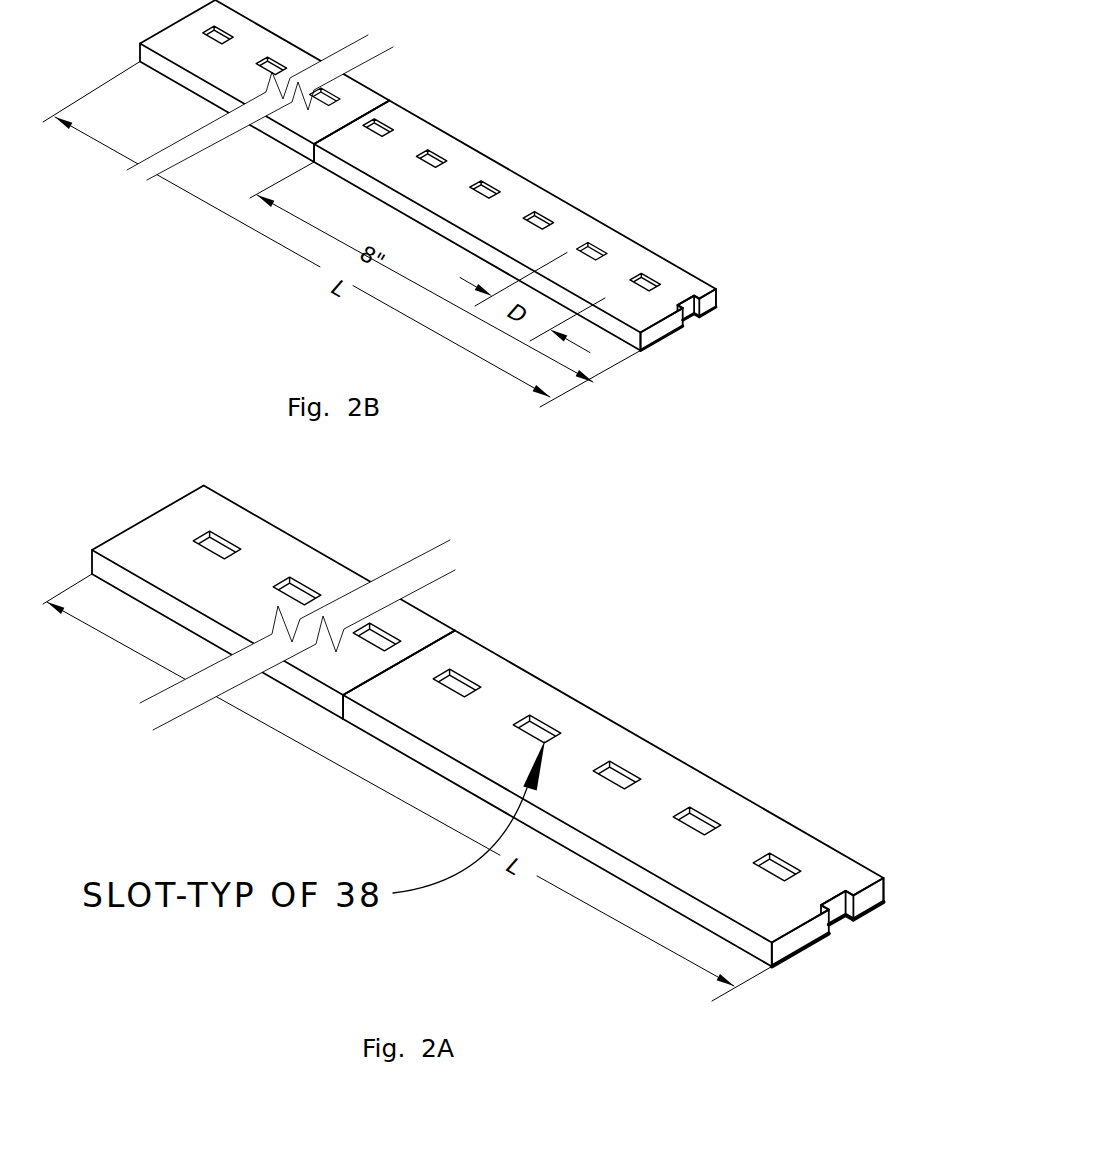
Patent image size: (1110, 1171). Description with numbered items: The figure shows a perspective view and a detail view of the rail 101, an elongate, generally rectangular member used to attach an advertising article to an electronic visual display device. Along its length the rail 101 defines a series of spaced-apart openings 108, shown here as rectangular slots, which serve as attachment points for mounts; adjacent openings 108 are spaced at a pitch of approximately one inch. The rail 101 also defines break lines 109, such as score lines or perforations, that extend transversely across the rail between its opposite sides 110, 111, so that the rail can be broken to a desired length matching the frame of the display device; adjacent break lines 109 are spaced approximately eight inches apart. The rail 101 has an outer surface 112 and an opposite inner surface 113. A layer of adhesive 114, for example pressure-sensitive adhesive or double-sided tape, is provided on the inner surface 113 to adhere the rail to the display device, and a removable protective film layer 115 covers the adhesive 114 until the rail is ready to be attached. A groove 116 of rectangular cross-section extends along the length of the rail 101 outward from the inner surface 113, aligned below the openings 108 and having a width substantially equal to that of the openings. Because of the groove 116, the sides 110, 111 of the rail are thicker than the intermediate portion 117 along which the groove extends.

In FIG. 2B, the rail 101 is at (490, 251).
In FIG. 2A, the rail 101 is at (488, 783).
In FIG. 2B, the openings 108 is at (543, 213).
In FIG. 2A, the openings 108 is at (617, 767).
In FIG. 2B, the break lines 109 is at (368, 115).
In FIG. 2A, the break lines 109 is at (437, 641).
In FIG. 2B, the side of the rail 110 is at (222, 97).
In FIG. 2A, the side of the rail 110 is at (318, 700).
In FIG. 2B, the side of the rail 111 is at (358, 77).
In FIG. 2A, the side of the rail 111 is at (307, 543).
In FIG. 2B, the outer surface 112 is at (462, 199).
In FIG. 2A, the outer surface 112 is at (485, 742).
In FIG. 2B, the inner surface 113 is at (651, 351).
In FIG. 2A, the inner surface 113 is at (790, 958).
In FIG. 2B, the layer of adhesive 114 is at (708, 313).
In FIG. 2A, the layer of adhesive 114 is at (872, 912).
In FIG. 2B, the protective film layer 115 is at (668, 336).
In FIG. 2A, the protective film layer 115 is at (808, 947).
In FIG. 2B, the groove 116 is at (690, 320).
In FIG. 2A, the groove 116 is at (838, 920).
In FIG. 2B, the intermediate portion 117 is at (690, 303).
In FIG. 2A, the intermediate portion 117 is at (838, 918).